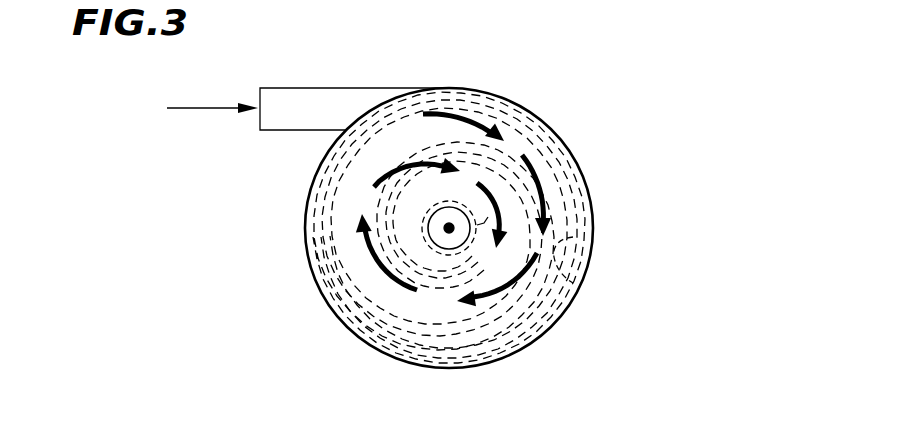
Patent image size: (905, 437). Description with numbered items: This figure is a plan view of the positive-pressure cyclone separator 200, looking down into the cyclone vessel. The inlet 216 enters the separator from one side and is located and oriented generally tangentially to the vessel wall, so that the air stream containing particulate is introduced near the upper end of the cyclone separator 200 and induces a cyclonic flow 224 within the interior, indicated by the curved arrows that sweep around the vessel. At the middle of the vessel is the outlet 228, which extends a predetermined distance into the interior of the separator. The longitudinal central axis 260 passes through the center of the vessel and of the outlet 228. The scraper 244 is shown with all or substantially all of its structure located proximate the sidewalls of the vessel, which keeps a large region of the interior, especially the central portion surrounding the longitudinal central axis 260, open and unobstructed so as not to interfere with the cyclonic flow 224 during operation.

The cyclone separator 200 is at (637, 156).
The inlet 216 is at (297, 88).
The cyclonic flow 224 is at (382, 275).
The outlet 228 is at (430, 214).
The scraper 244 is at (573, 287).
The longitudinal central axis 260 is at (452, 226).